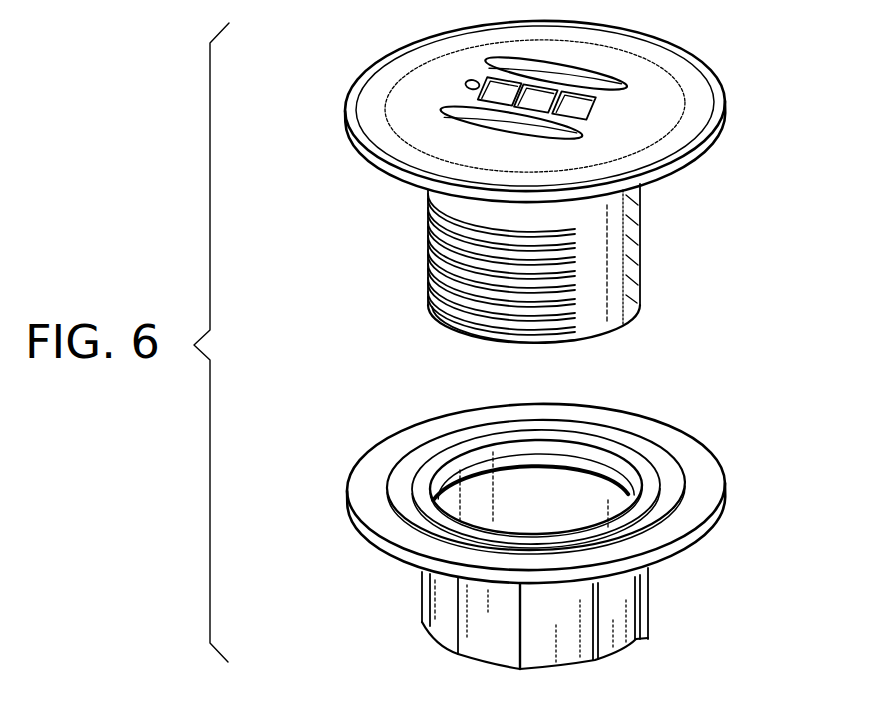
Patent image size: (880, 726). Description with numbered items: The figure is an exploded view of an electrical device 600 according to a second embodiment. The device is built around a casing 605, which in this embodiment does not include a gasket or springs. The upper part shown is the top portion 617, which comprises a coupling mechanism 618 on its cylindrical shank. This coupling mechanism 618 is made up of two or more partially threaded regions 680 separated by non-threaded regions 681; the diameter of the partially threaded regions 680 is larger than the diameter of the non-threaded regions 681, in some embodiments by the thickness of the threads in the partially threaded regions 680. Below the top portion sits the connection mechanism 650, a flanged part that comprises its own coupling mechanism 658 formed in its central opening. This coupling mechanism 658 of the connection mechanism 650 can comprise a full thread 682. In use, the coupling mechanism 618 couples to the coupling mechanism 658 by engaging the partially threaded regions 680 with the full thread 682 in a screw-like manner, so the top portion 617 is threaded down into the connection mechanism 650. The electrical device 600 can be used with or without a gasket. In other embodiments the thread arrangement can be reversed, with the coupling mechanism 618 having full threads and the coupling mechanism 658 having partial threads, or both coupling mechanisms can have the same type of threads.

The electrical device 600 is at (758, 654).
The casing 605 is at (542, 339).
The top portion 617 is at (537, 179).
The coupling mechanism 618 is at (428, 250).
The partially threaded regions 680 is at (430, 311).
The non-threaded regions 681 is at (608, 227).
The connection mechanism 650 is at (591, 518).
The coupling mechanism 658 is at (473, 466).
The full thread 682 is at (590, 470).